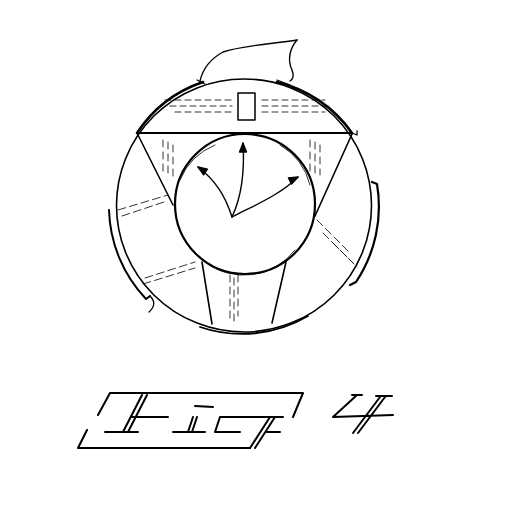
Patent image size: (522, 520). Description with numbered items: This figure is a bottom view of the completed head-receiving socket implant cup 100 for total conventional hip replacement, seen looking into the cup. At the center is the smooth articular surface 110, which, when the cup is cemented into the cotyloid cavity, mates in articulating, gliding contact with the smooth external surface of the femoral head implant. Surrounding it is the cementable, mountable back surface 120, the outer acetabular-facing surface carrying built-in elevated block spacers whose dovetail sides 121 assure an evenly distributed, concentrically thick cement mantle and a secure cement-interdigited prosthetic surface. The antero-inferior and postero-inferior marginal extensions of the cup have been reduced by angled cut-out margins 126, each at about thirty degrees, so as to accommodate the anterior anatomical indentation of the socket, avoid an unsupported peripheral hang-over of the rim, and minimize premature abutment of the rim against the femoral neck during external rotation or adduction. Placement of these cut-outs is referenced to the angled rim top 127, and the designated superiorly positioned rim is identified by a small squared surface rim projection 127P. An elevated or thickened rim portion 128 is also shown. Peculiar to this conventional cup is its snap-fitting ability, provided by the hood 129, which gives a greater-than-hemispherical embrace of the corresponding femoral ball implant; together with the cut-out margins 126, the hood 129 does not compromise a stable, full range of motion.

The head-receiving socket implant cup 100 is at (155, 85).
The articular surface 110 is at (200, 205).
The back surface 120 is at (297, 40).
The dovetail sides 121 is at (200, 327).
The cut-out margins 126 is at (170, 203).
The rim top 127 is at (172, 120).
The squared surface rim projection 127P is at (256, 99).
The elevated or thickened rim portion 128 is at (243, 307).
The hood 129 is at (232, 217).